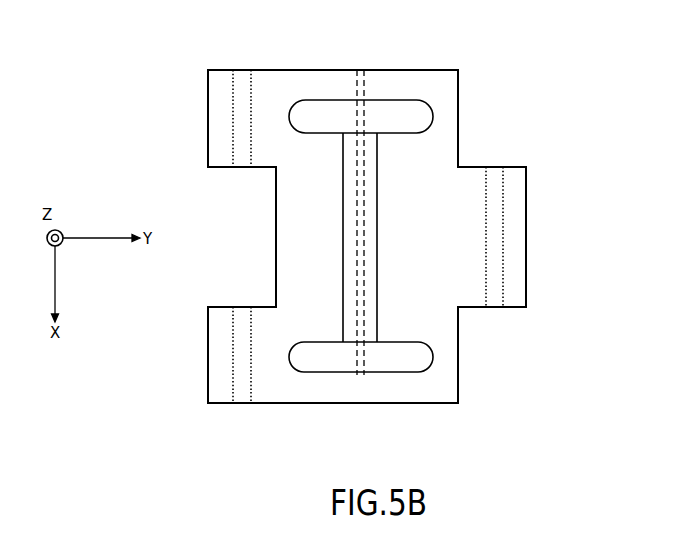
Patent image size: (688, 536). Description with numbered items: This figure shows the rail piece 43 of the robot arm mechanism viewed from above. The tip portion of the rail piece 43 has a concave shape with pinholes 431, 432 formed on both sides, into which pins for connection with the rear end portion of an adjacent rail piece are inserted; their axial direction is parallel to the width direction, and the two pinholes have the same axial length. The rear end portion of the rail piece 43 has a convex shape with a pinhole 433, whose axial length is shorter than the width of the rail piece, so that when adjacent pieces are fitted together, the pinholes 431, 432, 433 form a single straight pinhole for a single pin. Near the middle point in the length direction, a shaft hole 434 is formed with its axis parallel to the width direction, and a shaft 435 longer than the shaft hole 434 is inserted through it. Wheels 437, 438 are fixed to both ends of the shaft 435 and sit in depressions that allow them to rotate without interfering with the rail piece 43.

The rail piece 43 is at (545, 234).
The pinhole 431 is at (242, 406).
The pinhole 432 is at (245, 67).
The pinhole 433 is at (494, 165).
The shaft hole 434 is at (343, 230).
The shaft 435 is at (358, 70).
The wheel 437 is at (398, 373).
The wheel 438 is at (398, 103).